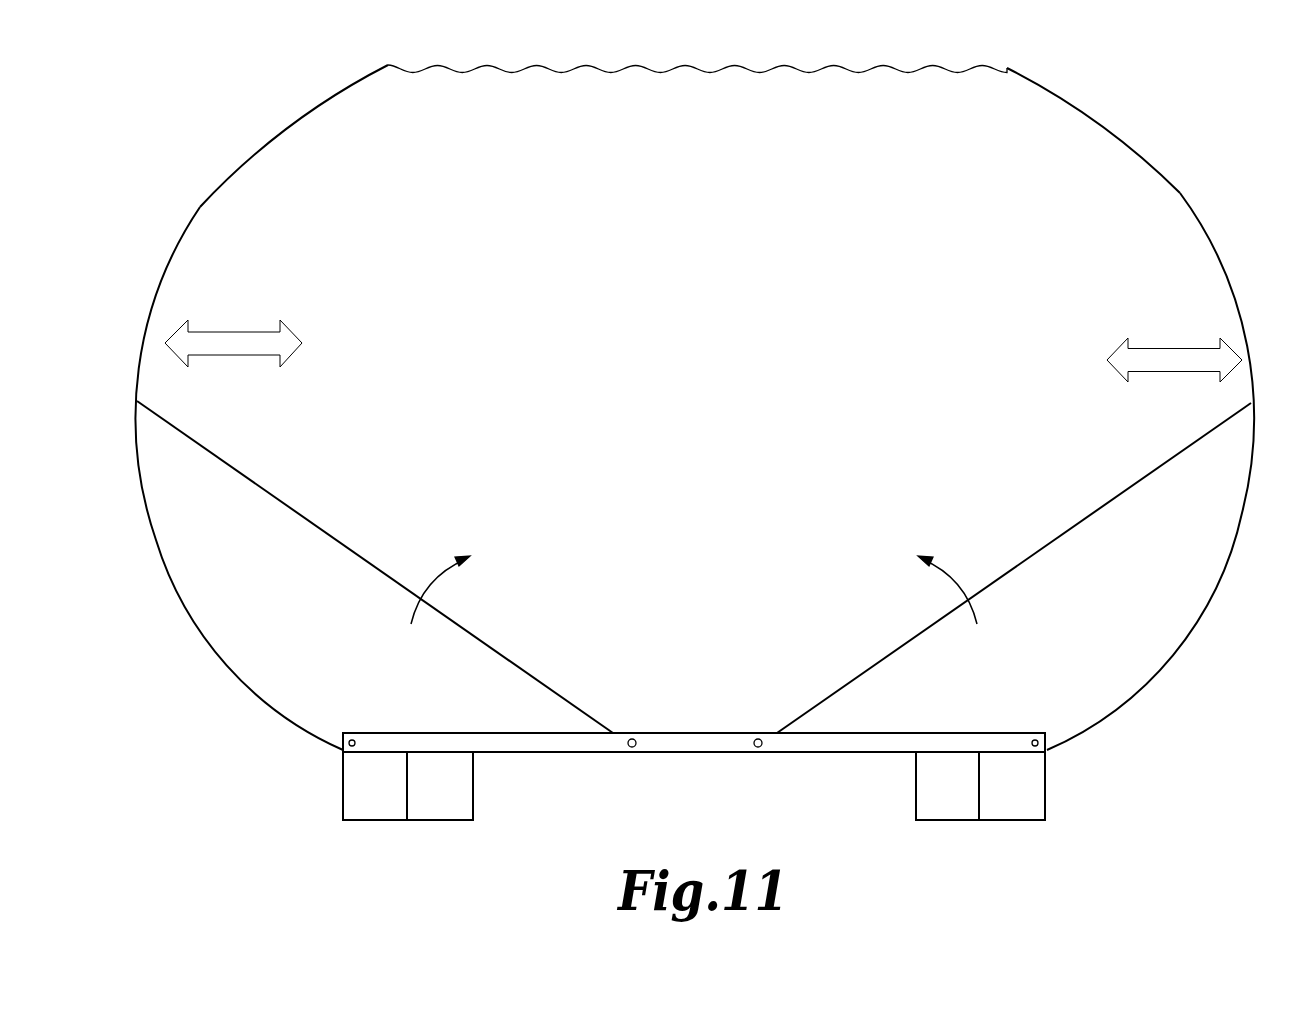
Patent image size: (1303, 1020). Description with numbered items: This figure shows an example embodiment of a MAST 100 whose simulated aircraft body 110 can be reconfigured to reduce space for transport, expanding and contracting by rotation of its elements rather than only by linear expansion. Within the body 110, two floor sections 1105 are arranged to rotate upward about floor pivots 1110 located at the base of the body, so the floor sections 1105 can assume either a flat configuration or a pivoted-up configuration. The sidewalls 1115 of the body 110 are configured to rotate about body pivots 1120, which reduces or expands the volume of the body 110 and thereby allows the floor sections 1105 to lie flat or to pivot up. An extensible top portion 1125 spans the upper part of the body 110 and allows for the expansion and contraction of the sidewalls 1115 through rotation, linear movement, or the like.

The MAST 100 is at (1190, 118).
The simulated aircraft body 110 is at (268, 137).
The floor sections 1105 is at (513, 662).
The floor pivots 1110 is at (623, 740).
The sidewalls 1115 is at (200, 205).
The body pivots 1120 is at (339, 747).
The extensible top portion 1125 is at (890, 72).